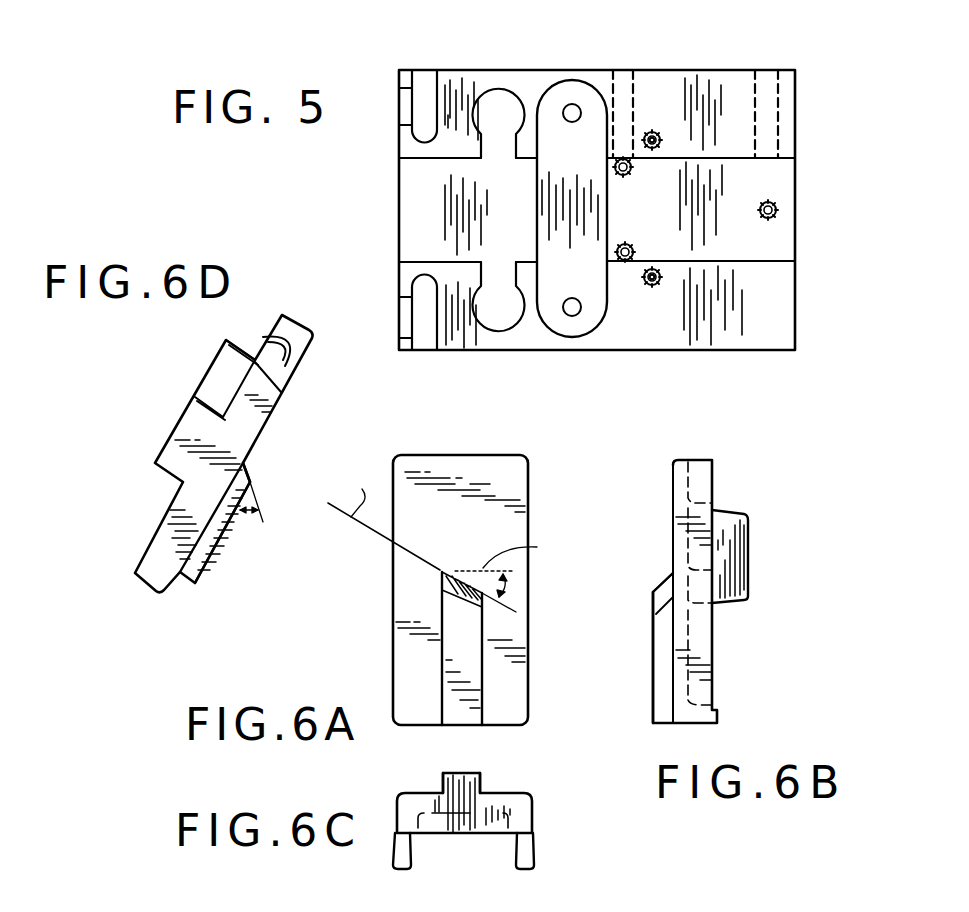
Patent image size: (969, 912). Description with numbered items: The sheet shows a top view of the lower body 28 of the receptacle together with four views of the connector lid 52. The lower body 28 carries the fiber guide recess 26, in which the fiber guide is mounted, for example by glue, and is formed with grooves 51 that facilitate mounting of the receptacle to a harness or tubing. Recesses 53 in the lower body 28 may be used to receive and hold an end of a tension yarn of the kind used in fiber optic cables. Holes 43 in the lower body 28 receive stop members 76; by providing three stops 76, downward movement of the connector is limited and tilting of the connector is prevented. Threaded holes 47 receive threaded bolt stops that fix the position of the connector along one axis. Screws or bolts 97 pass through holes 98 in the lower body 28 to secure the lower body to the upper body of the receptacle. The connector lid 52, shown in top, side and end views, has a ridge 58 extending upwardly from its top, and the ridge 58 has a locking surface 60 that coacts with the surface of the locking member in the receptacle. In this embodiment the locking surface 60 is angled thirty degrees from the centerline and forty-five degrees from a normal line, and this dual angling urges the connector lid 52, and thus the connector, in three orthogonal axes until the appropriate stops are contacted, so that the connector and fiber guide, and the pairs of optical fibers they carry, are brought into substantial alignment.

In FIG. 5, the fiber guide recess 26 is at (546, 103).
In FIG. 5, the lower body 28 is at (797, 290).
In FIG. 5, the holes 43 is at (773, 205).
In FIG. 5, the holes 47 is at (610, 93).
In FIG. 5, the grooves 51 is at (418, 78).
In FIG. 5, the recesses 53 is at (485, 103).
In FIG. 5, the stop members 76 is at (620, 158).
In FIG. 5, the screws or bolts 97 is at (650, 132).
In FIG. 5, the holes 98 is at (662, 133).
In FIG. 6A, the connector lid 52 is at (393, 697).
In FIG. 6B, the connector lid 52 is at (712, 478).
In FIG. 6C, the connector lid 52 is at (531, 820).
In FIG. 6D, the connector lid 52 is at (162, 540).
In FIG. 6A, the ridge 58 is at (457, 705).
In FIG. 6B, the ridge 58 is at (660, 687).
In FIG. 6C, the ridge 58 is at (481, 782).
In FIG. 6D, the ridge 58 is at (215, 523).
In FIG. 6A, the locking surface 60 is at (462, 600).
In FIG. 6B, the locking surface 60 is at (663, 597).
In FIG. 6D, the locking surface 60 is at (250, 480).